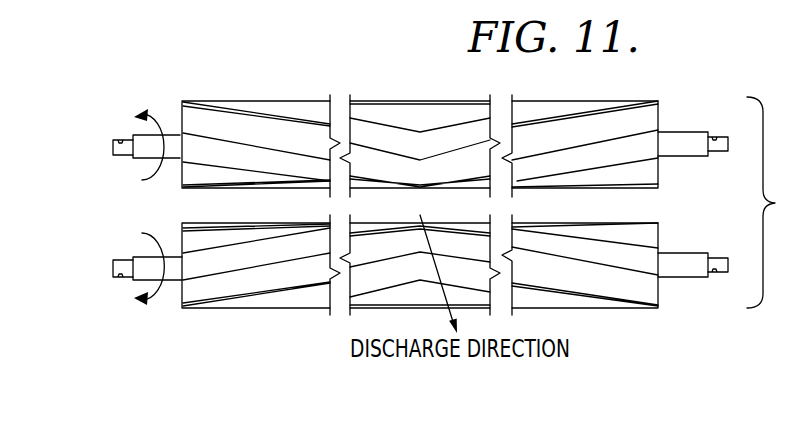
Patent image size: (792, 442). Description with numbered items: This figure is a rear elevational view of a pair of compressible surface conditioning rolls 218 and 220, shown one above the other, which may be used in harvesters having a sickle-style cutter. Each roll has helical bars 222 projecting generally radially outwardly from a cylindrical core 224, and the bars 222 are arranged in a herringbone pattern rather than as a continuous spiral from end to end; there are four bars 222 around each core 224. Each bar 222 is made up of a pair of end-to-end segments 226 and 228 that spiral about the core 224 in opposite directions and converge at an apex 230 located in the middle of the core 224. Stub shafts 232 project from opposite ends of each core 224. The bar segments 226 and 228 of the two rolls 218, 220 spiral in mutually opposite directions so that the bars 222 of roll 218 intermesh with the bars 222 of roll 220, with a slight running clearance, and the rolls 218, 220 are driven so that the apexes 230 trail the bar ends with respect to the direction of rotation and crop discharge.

The compressible surface conditioning roll 218 is at (438, 107).
The compressible surface conditioning roll 220 is at (170, 310).
The helical bar 222 is at (295, 108).
The cylindrical core 224 is at (190, 108).
The bar segment 226 is at (365, 103).
The bar segment 228 is at (637, 88).
The apex 230 is at (427, 108).
The stub shaft 232 is at (137, 138).